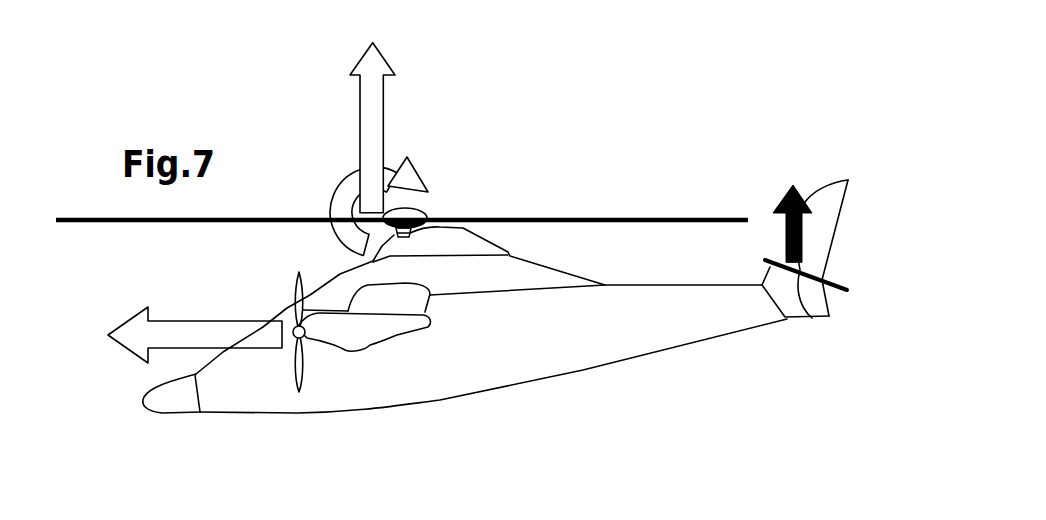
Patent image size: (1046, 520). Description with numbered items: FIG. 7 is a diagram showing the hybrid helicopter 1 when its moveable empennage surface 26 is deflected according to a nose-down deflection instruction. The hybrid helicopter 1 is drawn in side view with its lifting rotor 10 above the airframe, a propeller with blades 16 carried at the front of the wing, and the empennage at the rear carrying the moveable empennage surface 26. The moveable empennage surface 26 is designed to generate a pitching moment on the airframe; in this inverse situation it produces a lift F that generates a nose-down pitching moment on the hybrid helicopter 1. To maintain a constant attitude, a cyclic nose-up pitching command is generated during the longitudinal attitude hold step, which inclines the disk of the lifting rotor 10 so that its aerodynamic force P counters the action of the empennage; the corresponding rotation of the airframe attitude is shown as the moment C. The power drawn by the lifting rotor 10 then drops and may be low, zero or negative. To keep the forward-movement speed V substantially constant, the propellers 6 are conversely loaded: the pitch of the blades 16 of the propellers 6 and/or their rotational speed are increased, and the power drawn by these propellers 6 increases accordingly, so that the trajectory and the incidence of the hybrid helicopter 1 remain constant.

The hybrid helicopter 1 is at (495, 329).
The propellers 6 is at (302, 409).
The lifting rotor 10 is at (643, 218).
The blades 16 is at (303, 368).
The moveable empennage surface 26 is at (812, 318).
The aerodynamic force P is at (368, 108).
The pitching moment C is at (342, 183).
The forward speed V is at (202, 320).
The lift F is at (802, 228).